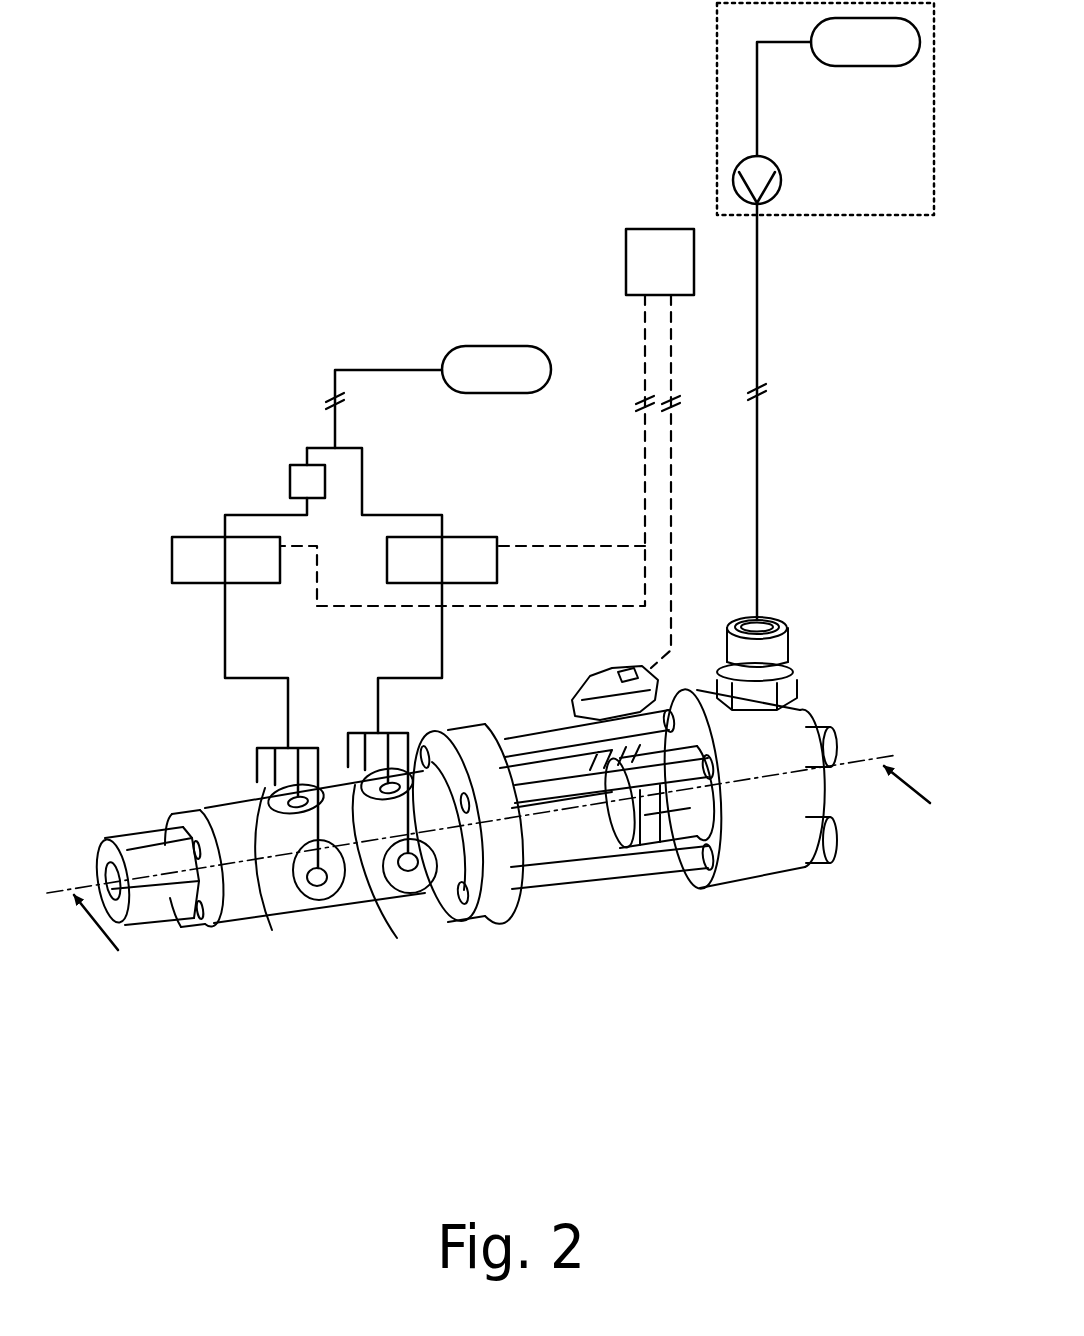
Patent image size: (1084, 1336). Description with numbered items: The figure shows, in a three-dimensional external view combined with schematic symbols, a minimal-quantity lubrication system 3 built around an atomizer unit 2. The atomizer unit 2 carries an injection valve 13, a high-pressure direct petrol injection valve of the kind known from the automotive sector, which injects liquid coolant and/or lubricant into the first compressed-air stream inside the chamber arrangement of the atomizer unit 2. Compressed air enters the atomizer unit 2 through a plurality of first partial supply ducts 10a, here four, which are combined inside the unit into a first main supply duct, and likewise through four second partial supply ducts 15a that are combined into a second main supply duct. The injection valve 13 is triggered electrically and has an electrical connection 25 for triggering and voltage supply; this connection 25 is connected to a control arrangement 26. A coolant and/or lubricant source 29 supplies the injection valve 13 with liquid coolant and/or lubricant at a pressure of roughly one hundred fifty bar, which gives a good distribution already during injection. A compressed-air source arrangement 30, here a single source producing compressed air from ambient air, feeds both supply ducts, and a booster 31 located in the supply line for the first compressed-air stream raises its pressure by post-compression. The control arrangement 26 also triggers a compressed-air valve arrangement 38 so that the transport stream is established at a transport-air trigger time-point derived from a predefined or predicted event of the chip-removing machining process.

The atomizer unit 2 is at (750, 1003).
The minimal-quantity lubrication system 3 is at (238, 42).
The first partial supply ducts 10a is at (397, 938).
The injection valve 13 is at (566, 832).
The second partial supply ducts 15a is at (272, 930).
The electrical connection 25 is at (593, 683).
The control arrangement 26 is at (679, 282).
The coolant and/or lubricant source 29 is at (886, 166).
The compressed-air source arrangement 30 is at (514, 388).
The booster 31 is at (290, 479).
The compressed-air valve arrangement 38 is at (400, 597).